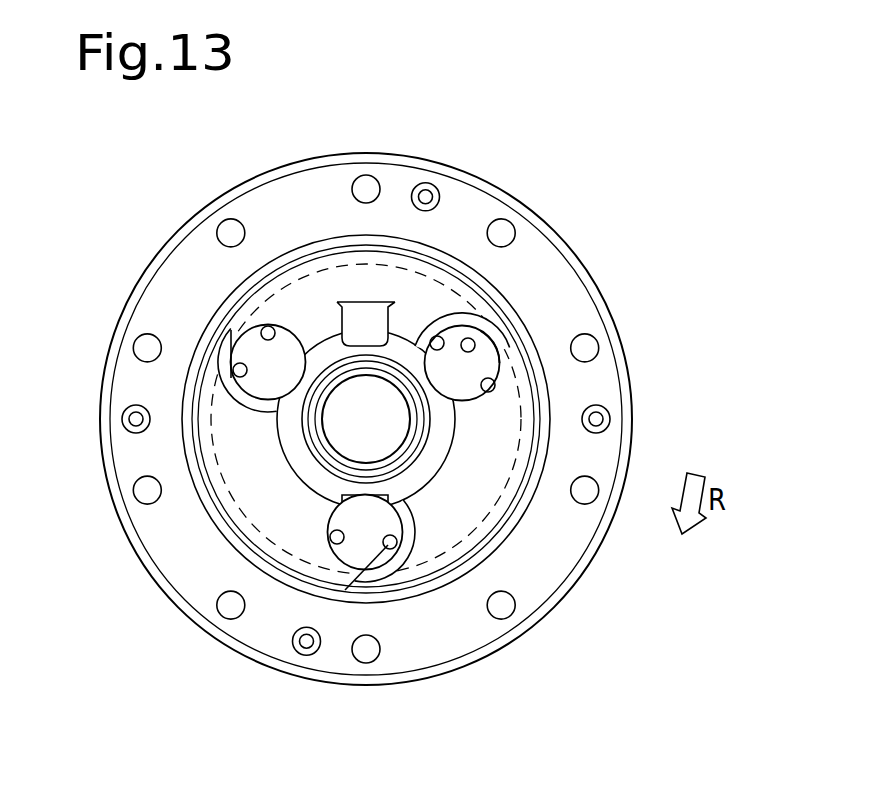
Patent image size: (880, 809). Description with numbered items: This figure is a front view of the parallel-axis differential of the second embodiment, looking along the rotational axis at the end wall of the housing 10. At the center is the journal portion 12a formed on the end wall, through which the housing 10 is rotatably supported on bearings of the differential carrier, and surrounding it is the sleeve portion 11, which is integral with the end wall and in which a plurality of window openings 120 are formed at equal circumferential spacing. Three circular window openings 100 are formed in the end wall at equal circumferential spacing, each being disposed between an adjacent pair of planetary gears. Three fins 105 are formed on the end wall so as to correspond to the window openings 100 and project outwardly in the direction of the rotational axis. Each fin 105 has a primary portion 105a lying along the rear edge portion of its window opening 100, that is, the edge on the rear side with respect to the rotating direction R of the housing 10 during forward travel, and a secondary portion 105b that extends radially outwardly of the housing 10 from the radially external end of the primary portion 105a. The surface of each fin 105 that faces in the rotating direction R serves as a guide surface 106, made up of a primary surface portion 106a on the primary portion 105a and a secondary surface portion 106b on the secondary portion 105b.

The housing 10 is at (460, 164).
The sleeve portion 11 is at (312, 243).
The journal portion 12a is at (293, 470).
The window opening 100 is at (265, 333).
The fin 105 is at (242, 388).
The primary portion 105a is at (464, 304).
The secondary portion 105b is at (493, 333).
The guide surface 106 is at (240, 368).
The primary surface portion 106a is at (435, 338).
The secondary surface portion 106b is at (493, 350).
The window opening 120 is at (350, 262).